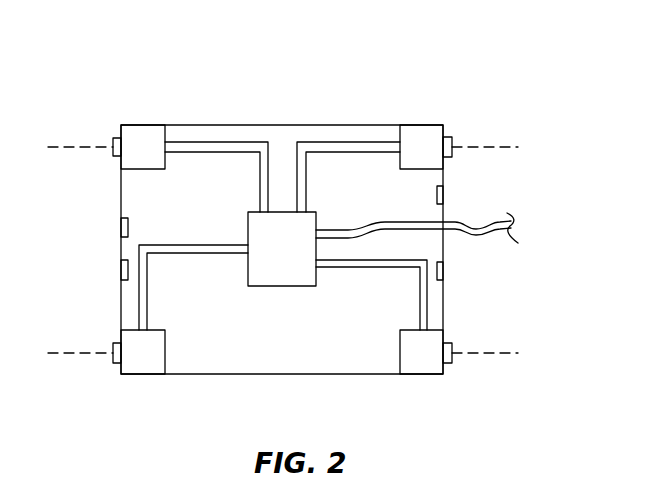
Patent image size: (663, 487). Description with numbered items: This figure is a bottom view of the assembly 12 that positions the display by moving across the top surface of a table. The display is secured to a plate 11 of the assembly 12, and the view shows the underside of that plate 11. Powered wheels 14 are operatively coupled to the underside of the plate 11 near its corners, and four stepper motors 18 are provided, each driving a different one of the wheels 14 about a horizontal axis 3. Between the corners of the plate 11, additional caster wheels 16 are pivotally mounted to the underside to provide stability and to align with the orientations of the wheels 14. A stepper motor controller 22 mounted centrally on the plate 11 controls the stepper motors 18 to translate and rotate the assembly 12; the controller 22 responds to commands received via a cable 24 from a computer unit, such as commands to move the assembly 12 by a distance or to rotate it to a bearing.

The horizontal axis 3 is at (280, 232).
The plate 11 is at (282, 225).
The assembly 12 is at (354, 115).
The powered wheels 14 is at (280, 225).
The caster wheels 16 is at (282, 220).
The stepper motors 18 is at (295, 249).
The stepper motor controller 22 is at (283, 240).
The cable 24 is at (432, 216).